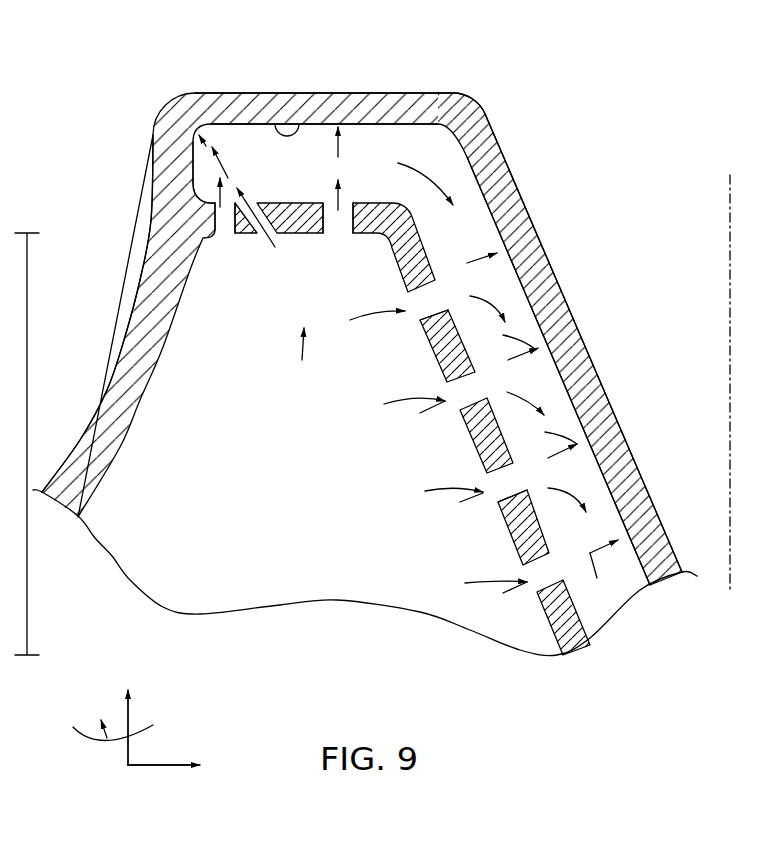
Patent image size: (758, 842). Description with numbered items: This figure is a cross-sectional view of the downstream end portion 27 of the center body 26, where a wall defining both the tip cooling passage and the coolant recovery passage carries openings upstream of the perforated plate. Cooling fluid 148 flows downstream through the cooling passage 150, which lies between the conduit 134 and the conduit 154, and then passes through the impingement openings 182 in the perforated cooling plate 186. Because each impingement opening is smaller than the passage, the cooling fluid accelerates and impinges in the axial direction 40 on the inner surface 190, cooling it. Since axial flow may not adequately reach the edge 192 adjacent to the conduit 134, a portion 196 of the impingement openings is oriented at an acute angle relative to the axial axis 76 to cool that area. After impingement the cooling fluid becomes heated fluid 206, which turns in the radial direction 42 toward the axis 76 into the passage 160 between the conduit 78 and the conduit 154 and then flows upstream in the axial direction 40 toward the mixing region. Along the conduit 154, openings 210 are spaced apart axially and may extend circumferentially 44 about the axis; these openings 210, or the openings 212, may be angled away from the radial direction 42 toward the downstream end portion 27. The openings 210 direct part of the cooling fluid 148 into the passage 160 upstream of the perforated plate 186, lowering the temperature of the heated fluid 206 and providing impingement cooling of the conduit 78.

The center body 26 is at (215, 62).
The downstream end portion 27 is at (443, 60).
The axial direction 40 is at (123, 752).
The radial direction 42 is at (165, 763).
The circumferential direction 44 is at (107, 732).
The axial axis 76 is at (728, 273).
The conduit 78 is at (530, 217).
The conduit 134 is at (143, 273).
The cooling fluid 148 is at (225, 187).
The cooling passage 150 is at (281, 477).
The conduit 154 is at (472, 443).
The passage 160 is at (555, 335).
The impingement openings 182 is at (228, 232).
The perforated cooling plate 186 is at (328, 124).
The inner surface 190 is at (297, 203).
The edge 192 is at (199, 136).
The angled impingement openings 196 is at (263, 225).
The heated fluid 206 is at (422, 172).
The openings 210 is at (417, 313).
The openings 212 is at (27, 365).